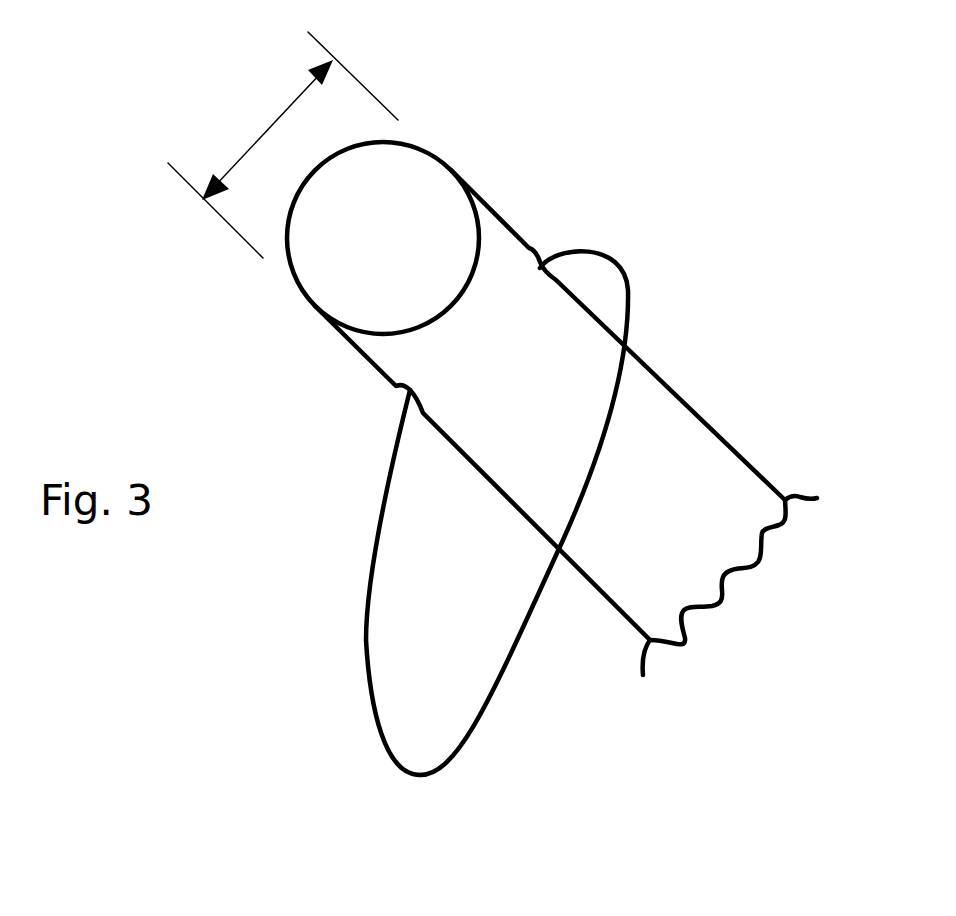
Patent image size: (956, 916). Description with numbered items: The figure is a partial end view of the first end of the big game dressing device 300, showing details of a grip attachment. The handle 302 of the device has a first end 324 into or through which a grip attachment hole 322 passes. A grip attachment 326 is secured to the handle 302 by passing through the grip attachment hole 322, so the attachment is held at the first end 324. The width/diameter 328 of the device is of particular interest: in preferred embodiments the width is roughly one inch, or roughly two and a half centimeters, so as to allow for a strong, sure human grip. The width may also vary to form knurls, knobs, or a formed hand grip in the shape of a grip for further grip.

The big game dressing device 300 is at (226, 347).
The handle 302 is at (720, 455).
The grip attachment hole 322 is at (408, 393).
The first end 324 is at (438, 190).
The grip attachment 326 is at (627, 260).
The width/diameter 328 is at (273, 120).